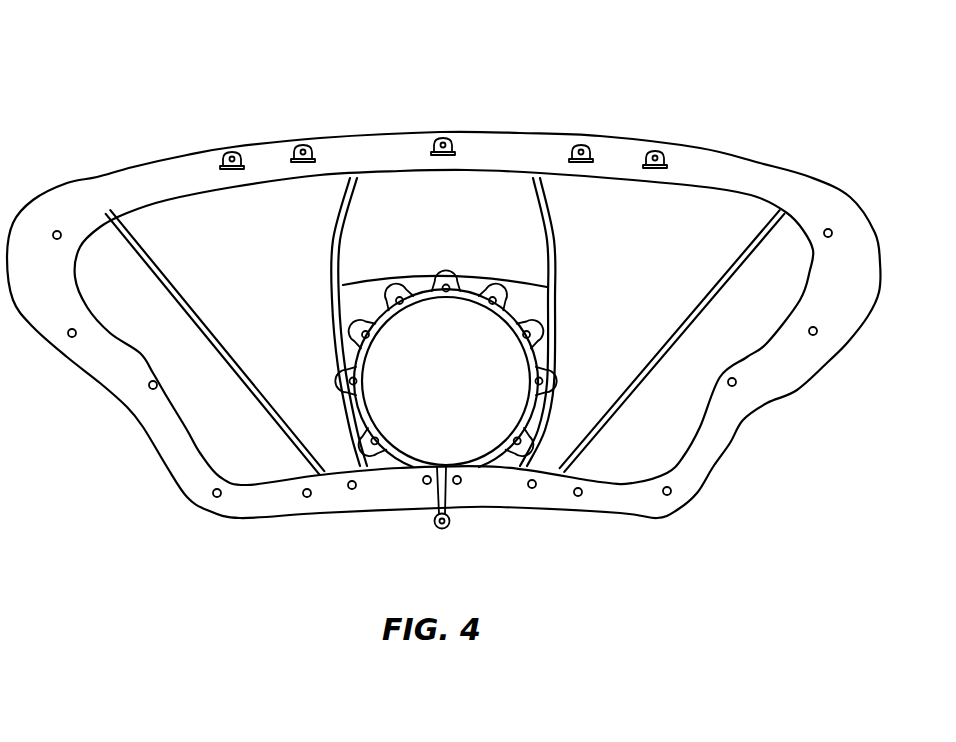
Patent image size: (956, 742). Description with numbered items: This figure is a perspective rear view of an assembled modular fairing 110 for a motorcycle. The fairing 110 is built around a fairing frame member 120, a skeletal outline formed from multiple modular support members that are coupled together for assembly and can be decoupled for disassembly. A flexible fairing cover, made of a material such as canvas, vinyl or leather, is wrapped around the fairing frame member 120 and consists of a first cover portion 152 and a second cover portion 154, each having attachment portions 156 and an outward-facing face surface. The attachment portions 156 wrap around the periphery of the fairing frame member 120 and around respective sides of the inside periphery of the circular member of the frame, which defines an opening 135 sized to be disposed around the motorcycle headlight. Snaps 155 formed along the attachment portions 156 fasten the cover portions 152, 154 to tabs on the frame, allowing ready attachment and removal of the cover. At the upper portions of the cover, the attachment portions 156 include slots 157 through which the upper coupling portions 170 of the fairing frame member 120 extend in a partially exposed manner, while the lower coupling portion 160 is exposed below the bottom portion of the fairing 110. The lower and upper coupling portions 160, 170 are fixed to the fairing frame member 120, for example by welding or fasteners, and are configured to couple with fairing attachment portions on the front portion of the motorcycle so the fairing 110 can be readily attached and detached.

The fairing 110 is at (631, 107).
The fairing frame member 120 is at (649, 351).
The opening 135 is at (367, 382).
The first cover portion 152 is at (752, 162).
The second cover portion 154 is at (92, 177).
The snaps 155 is at (158, 382).
The attachment portions 156 is at (692, 182).
The slots 157 is at (322, 160).
The lower coupling portion 160 is at (454, 513).
The upper coupling portions 170 is at (241, 158).